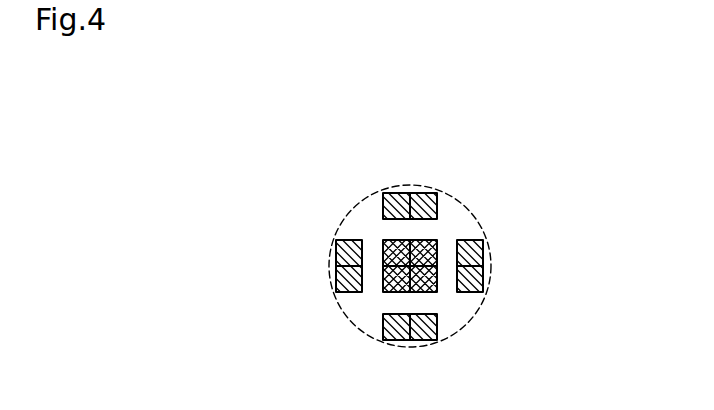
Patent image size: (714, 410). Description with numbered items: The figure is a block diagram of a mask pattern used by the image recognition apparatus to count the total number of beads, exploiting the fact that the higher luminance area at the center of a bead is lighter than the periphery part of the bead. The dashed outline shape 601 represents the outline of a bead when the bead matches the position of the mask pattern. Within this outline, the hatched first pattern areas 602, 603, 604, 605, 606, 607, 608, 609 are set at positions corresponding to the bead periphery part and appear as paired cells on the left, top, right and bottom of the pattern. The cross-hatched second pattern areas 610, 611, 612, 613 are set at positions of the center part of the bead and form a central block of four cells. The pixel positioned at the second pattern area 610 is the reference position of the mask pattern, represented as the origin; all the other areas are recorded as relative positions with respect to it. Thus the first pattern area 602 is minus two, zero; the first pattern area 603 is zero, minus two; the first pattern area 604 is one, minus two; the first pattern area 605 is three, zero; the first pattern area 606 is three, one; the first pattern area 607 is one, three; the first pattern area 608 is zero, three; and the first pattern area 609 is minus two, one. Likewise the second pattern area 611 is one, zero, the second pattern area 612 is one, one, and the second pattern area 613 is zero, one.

The outline shape 601 is at (340, 308).
The first pattern area 602 is at (336, 257).
The first pattern area 603 is at (403, 193).
The first pattern area 604 is at (425, 192).
The first pattern area 605 is at (483, 258).
The first pattern area 606 is at (484, 291).
The first pattern area 607 is at (424, 340).
The first pattern area 608 is at (390, 340).
The first pattern area 609 is at (336, 292).
The second pattern area 610 is at (389, 240).
The second pattern area 611 is at (433, 240).
The second pattern area 612 is at (437, 292).
The second pattern area 613 is at (383, 292).